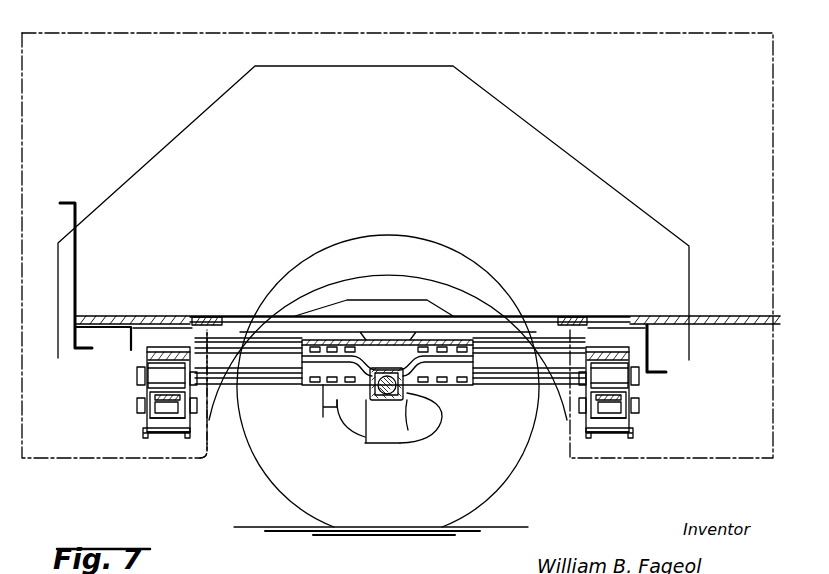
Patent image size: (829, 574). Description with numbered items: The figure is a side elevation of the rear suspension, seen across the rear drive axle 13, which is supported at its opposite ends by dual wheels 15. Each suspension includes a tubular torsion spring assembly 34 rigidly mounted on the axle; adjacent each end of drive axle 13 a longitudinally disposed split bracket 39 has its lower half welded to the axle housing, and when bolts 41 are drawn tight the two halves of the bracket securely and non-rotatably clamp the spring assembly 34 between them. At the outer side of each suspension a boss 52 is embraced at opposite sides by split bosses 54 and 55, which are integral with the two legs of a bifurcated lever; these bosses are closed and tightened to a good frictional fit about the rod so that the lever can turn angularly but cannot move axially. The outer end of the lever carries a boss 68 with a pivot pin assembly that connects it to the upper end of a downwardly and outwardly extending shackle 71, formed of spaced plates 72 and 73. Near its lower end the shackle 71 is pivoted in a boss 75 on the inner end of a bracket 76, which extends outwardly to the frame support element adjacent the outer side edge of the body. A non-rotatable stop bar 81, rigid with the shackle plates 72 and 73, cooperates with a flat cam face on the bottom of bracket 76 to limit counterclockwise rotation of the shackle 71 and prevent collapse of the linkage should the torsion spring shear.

The rear drive axle 13 is at (418, 437).
The dual wheels 15 is at (516, 470).
The tubular torsion spring assembly 34 is at (562, 382).
The split bracket 39 is at (477, 370).
The bolt 41 is at (465, 375).
The boss 52 is at (162, 352).
The split boss 54 is at (179, 365).
The split boss 55 is at (152, 355).
The boss 68 is at (158, 375).
The shackle 71 is at (136, 396).
The shackle plate 72 is at (145, 427).
The shackle plate 73 is at (198, 429).
The boss 75 is at (175, 432).
The bracket 76 is at (163, 412).
The stop bar 81 is at (170, 433).